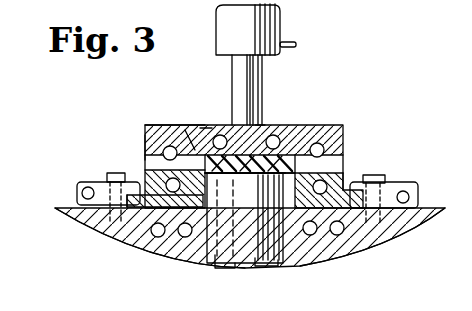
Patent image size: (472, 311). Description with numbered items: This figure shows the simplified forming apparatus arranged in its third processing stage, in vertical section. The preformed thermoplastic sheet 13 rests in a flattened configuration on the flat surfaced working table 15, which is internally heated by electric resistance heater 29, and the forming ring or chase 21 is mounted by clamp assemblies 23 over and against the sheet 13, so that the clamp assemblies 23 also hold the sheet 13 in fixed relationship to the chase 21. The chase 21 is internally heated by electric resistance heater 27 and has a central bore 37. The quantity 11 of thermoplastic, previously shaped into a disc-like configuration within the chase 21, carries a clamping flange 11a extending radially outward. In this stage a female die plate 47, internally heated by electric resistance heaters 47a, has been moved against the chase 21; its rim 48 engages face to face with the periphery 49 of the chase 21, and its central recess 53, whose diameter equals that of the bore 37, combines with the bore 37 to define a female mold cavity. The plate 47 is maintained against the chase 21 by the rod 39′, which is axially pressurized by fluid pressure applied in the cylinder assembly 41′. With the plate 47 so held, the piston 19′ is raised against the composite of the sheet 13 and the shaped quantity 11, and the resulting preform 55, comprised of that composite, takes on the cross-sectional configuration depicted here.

The cylinder assembly 41′ is at (272, 20).
The rod 39′ is at (253, 74).
The rim 48 is at (188, 140).
The electric resistance heaters 47a is at (170, 140).
The bore 37 is at (203, 126).
The quantity 11 is at (262, 127).
The central recess 53 is at (303, 127).
The female die plate 47 is at (345, 130).
The periphery 49 is at (147, 150).
The electric resistance heater 27 is at (150, 171).
The preform 55 is at (292, 163).
The forming ring or chase 21 is at (345, 185).
The clamp assemblies 23 is at (80, 183).
The electric resistance heater 29 is at (128, 254).
The working table 15 is at (167, 250).
The piston 19′ is at (292, 253).
The clamping flange 11a is at (327, 244).
The preformed sheet 13 is at (375, 242).